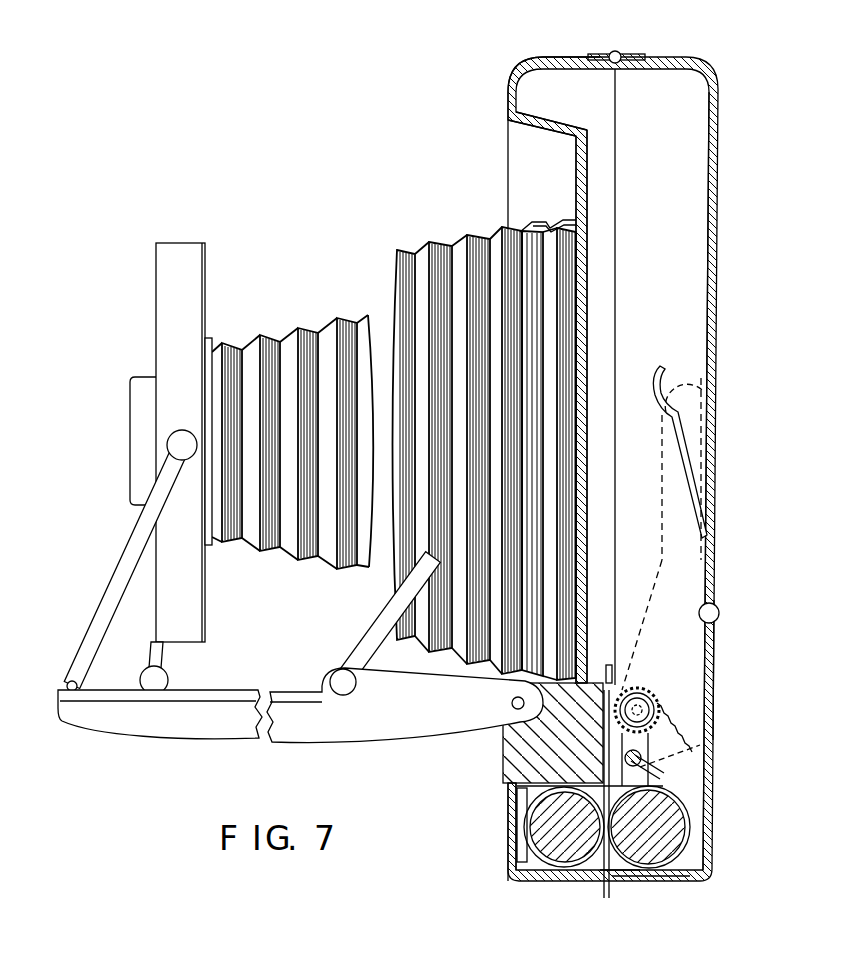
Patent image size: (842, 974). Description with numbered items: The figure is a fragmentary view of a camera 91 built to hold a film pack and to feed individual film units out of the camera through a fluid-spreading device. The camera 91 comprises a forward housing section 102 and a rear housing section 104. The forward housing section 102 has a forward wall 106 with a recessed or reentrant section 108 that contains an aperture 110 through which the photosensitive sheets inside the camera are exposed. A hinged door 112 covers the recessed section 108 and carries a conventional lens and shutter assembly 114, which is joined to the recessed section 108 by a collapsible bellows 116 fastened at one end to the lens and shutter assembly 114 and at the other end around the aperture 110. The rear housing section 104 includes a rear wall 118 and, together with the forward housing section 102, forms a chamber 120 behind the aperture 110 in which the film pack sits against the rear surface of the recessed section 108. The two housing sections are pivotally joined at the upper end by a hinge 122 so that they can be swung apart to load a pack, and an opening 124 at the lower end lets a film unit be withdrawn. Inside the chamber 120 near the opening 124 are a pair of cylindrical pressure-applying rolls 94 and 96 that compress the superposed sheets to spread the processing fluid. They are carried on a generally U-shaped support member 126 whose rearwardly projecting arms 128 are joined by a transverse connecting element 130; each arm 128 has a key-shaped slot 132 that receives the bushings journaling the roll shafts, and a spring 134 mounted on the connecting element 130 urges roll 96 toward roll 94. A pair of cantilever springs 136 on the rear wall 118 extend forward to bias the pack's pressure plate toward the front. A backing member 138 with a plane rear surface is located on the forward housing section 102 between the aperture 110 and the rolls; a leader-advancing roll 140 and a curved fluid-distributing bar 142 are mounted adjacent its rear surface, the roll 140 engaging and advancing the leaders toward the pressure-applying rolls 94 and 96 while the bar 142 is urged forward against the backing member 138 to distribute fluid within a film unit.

The camera 91 is at (505, 72).
The pressure-applying roll 94 is at (665, 875).
The pressure-applying roll 96 is at (565, 867).
The forward housing section 102 is at (505, 195).
The rear housing section 104 is at (721, 327).
The forward wall 106 is at (507, 118).
The recessed section 108 is at (576, 151).
The aperture 110 is at (582, 238).
The hinged door 112 is at (292, 735).
The lens and shutter assembly 114 is at (155, 310).
The collapsible bellows 116 is at (397, 290).
The rear wall 118 is at (713, 663).
The chamber 120 is at (703, 278).
The hinge 122 is at (621, 51).
The opening 124 is at (605, 873).
The U-shaped support member 126 is at (508, 795).
The arms 128 is at (630, 878).
The transverse connecting element 130 is at (516, 852).
The slot 132 is at (620, 875).
The spring 134 is at (527, 798).
The cantilever springs 136 is at (672, 416).
The backing member 138 is at (503, 750).
The leader-advancing roll 140 is at (657, 692).
The curved fluid-distributing bar 142 is at (607, 772).